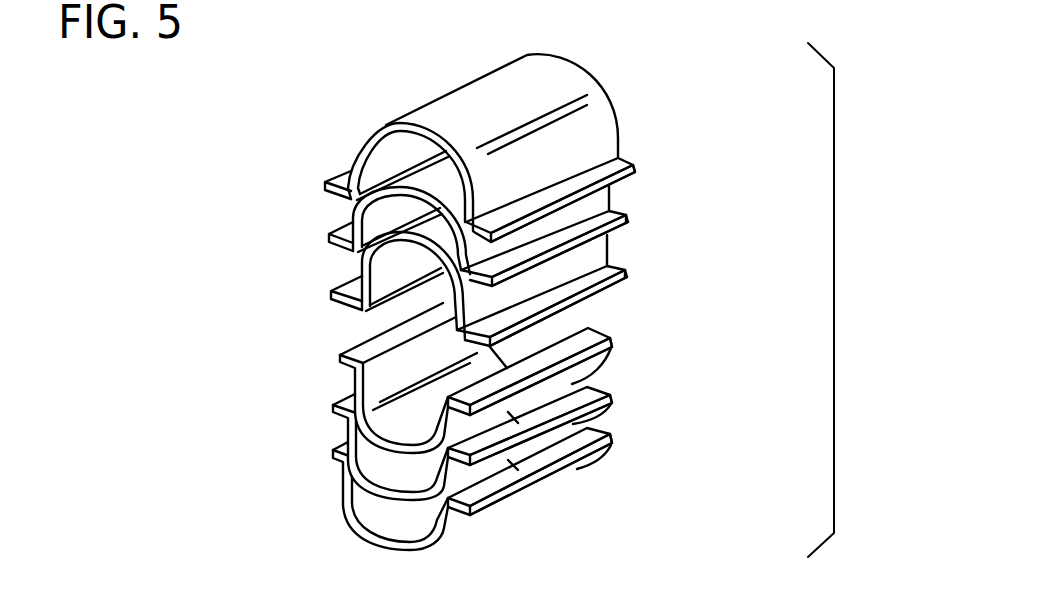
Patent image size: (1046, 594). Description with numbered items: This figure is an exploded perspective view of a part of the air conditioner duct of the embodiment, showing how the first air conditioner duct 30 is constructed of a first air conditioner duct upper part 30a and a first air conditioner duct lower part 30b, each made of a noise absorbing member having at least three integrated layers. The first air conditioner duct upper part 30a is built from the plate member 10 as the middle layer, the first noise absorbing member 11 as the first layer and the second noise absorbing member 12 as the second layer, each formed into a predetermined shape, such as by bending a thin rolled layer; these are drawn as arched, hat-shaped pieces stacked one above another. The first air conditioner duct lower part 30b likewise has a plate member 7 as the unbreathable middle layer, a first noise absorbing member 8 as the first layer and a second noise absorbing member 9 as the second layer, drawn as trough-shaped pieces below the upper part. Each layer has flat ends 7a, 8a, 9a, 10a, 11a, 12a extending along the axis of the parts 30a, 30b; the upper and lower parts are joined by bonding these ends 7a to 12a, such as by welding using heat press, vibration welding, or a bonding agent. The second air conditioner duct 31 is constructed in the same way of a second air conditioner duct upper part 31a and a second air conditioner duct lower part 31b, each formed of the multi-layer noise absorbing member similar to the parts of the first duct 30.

The first air conditioner duct 30 is at (462, 302).
The second air conditioner duct 31 is at (434, 302).
The first air conditioner duct upper part 30a is at (434, 200).
The second air conditioner duct upper part 31a is at (481, 200).
The first air conditioner duct lower part 30b is at (423, 417).
The second air conditioner duct lower part 31b is at (469, 417).
The second noise absorbing member 12 is at (351, 141).
The plate member 10 is at (353, 214).
The first noise absorbing member 11 is at (362, 258).
The first noise absorbing member 8 is at (355, 383).
The plate member 7 is at (348, 432).
The second noise absorbing member 9 is at (343, 478).
The end of second noise absorbing member 12a is at (636, 167).
The end of plate member 10a is at (628, 217).
The end of first noise absorbing member 11a is at (627, 272).
The end of first noise absorbing member 8a is at (612, 343).
The end of plate member 7a is at (612, 397).
The end of second noise absorbing member 9a is at (613, 438).